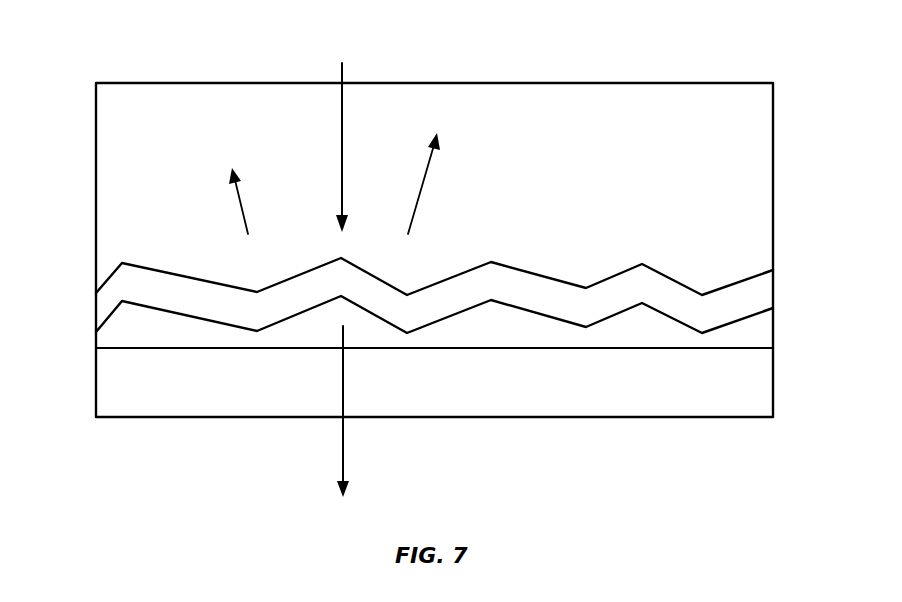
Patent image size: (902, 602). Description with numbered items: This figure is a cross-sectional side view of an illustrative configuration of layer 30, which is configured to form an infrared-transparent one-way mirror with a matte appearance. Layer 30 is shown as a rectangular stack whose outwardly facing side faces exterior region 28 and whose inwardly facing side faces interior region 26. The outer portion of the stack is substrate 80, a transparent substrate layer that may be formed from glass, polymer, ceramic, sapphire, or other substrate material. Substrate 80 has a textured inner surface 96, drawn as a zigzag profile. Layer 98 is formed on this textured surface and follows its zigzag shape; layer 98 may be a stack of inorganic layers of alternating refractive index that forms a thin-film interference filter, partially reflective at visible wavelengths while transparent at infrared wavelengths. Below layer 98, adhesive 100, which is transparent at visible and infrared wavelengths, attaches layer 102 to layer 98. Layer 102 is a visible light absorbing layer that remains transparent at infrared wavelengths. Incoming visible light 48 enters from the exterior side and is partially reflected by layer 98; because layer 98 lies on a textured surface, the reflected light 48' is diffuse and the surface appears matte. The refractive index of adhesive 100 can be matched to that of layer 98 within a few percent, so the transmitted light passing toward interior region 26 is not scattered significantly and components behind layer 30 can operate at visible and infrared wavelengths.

The interior region 26 is at (78, 512).
The exterior region 28 is at (105, 55).
The layer 30 is at (805, 80).
The incoming visible light 48 is at (373, 147).
The reflected light 48' is at (331, 183).
The substrate 80 is at (765, 185).
The textured inner surface 96 is at (766, 270).
The layer 98 is at (762, 291).
The adhesive 100 is at (96, 340).
The visible light absorbing layer 102 is at (765, 393).